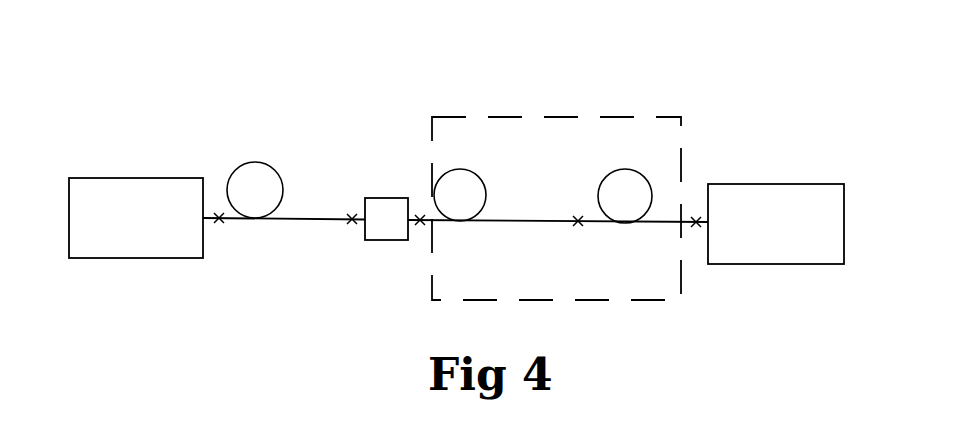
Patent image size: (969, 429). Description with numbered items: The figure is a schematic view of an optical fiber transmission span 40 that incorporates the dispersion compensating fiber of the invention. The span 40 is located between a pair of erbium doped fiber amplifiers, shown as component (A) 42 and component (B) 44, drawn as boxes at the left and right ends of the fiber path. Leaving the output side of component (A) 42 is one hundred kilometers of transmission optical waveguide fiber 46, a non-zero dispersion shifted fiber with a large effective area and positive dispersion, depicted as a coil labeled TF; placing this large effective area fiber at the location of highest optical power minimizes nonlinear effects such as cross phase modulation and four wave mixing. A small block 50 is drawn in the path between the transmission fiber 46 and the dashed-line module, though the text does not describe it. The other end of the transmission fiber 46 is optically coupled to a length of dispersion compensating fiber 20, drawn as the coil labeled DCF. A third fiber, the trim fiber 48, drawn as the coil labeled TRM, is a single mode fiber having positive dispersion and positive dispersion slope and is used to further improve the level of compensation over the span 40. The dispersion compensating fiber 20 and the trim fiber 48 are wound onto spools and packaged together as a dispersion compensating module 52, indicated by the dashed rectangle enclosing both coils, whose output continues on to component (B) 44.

The optical fiber transmission span 40 is at (508, 80).
The component (A) 42 is at (142, 178).
The component (B) 44 is at (780, 184).
The transmission optical waveguide fiber 46 is at (352, 228).
The trim fiber 48 is at (696, 230).
The optical device 50 is at (392, 240).
The dispersion compensating module 52 is at (642, 113).
The dispersion compensating fiber 20 is at (420, 230).
The transmission fiber coil TF is at (293, 217).
The dispersion compensating fiber coil DCF is at (478, 172).
The termination fiber coil TRM is at (632, 170).